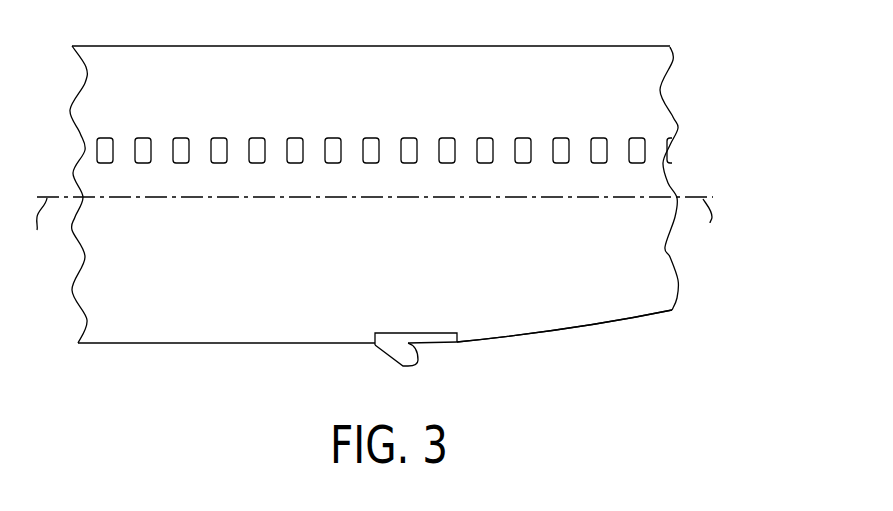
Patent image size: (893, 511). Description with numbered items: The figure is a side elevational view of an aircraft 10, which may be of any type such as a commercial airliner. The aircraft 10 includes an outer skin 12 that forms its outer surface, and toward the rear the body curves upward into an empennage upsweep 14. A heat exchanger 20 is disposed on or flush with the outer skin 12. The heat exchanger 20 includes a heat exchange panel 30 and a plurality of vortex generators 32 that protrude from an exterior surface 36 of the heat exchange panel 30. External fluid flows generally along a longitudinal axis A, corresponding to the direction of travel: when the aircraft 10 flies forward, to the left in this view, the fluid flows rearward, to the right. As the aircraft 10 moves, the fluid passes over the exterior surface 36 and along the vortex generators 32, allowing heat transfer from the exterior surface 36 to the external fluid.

The aircraft 10 is at (677, 48).
The outer skin 12 is at (590, 177).
The empennage upsweep 14 is at (668, 313).
The heat exchanger 20 is at (466, 352).
The heat exchange panel 30 is at (437, 333).
The vortex generators 32 is at (398, 368).
The exterior surface 36 is at (432, 345).